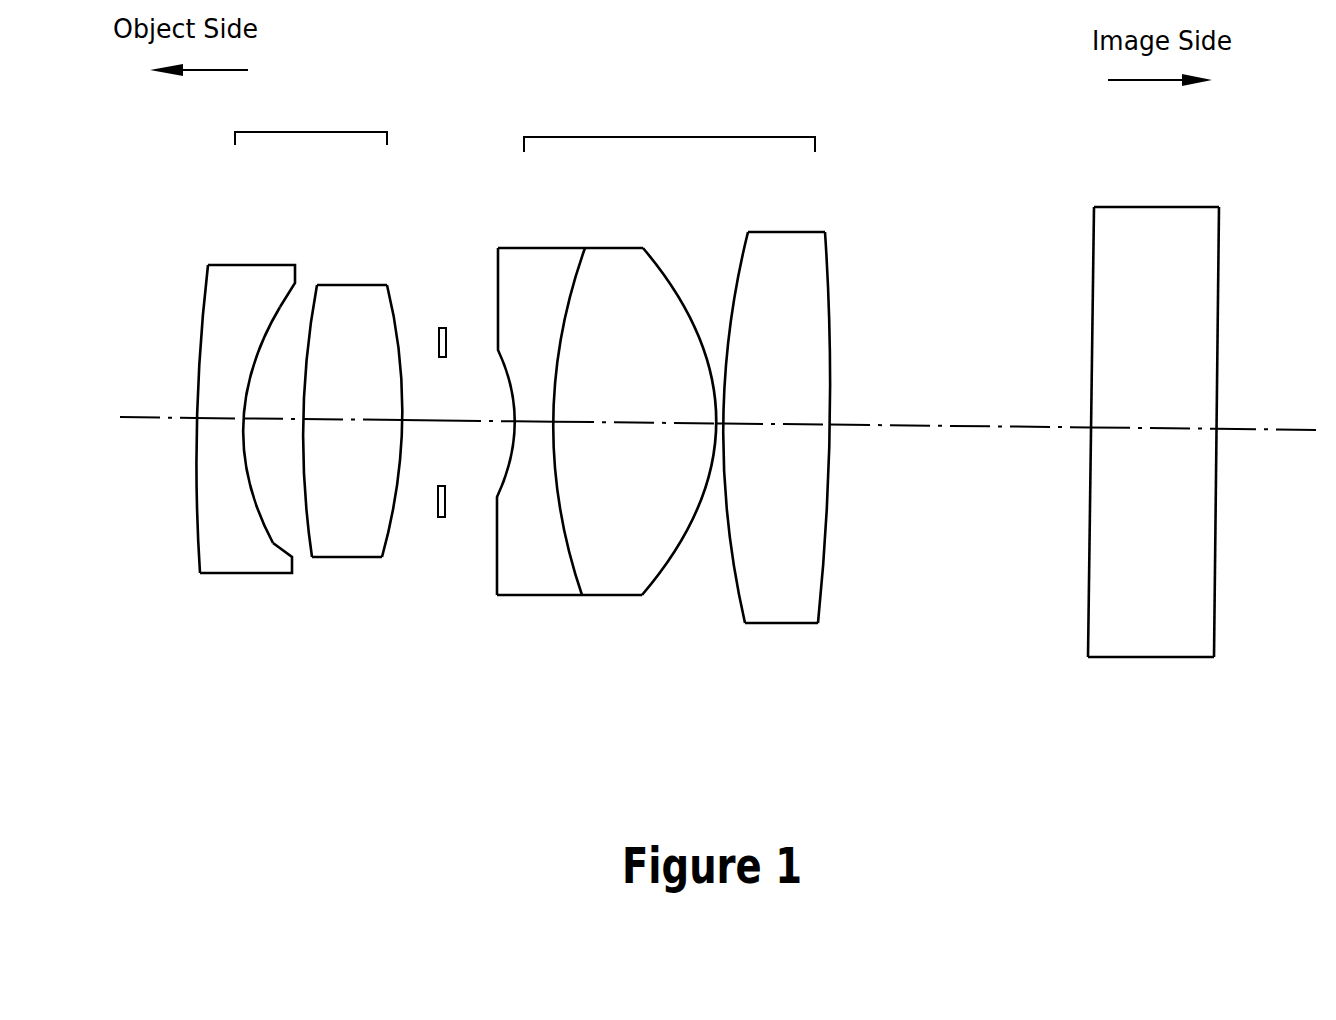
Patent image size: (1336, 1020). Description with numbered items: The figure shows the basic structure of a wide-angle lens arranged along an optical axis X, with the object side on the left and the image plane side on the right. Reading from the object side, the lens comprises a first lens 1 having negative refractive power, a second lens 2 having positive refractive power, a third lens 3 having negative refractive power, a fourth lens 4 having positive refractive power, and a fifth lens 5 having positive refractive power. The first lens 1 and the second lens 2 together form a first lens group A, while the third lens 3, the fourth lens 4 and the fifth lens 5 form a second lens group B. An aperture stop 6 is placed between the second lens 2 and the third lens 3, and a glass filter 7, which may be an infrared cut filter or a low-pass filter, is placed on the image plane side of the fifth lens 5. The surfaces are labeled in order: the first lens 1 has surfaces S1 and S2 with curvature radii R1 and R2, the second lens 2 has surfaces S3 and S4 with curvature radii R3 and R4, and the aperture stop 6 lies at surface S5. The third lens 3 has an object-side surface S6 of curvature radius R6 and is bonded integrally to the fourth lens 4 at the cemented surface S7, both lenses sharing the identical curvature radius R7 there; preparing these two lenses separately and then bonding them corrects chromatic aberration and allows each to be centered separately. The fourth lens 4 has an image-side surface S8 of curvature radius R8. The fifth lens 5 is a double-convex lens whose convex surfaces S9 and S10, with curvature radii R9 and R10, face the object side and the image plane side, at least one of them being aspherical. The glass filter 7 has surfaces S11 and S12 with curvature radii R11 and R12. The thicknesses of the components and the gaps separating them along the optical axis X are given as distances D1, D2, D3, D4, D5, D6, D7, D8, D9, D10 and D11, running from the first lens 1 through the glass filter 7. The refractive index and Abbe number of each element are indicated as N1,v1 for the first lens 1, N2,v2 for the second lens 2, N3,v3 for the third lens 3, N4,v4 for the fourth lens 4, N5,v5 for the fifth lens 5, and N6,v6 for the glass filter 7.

The first lens group A is at (311, 120).
The second lens group B is at (669, 128).
The optical axis X is at (132, 418).
The first lens 1 is at (233, 263).
The second lens 2 is at (318, 285).
The third lens 3 is at (527, 248).
The fourth lens 4 is at (617, 248).
The fifth lens 5 is at (795, 232).
The aperture stop 6 is at (447, 327).
The glass filter 7 is at (1160, 207).
The curvature radius R1 is at (202, 296).
The curvature radius R2 is at (278, 312).
The curvature radius R3 is at (305, 363).
The curvature radius R4 is at (393, 293).
The curvature radius R6 is at (507, 380).
The curvature radius R7 is at (575, 307).
The curvature radius R8 is at (687, 310).
The curvature radius R9 is at (743, 257).
The curvature radius R10 is at (830, 288).
The curvature radius R11 is at (1093, 275).
The curvature radius R12 is at (1218, 310).
The surface S1 is at (197, 370).
The surface S2 is at (254, 356).
The surface S3 is at (305, 393).
The surface S4 is at (403, 393).
The surface S5 is at (439, 340).
The surface S6 is at (512, 414).
The surface S7 is at (558, 393).
The surface S8 is at (690, 317).
The surface S9 is at (730, 318).
The surface S10 is at (830, 377).
The surface S11 is at (1092, 393).
The surface S12 is at (1218, 383).
The distance along optical axis D1 is at (215, 422).
The distance along optical axis D2 is at (278, 422).
The distance along optical axis D3 is at (363, 422).
The distance along optical axis D4 is at (433, 423).
The distance along optical axis D5 is at (480, 425).
The distance along optical axis D6 is at (537, 425).
The distance along optical axis D7 is at (630, 425).
The distance along optical axis D8 is at (717, 425).
The distance along optical axis D9 is at (797, 430).
The distance along optical axis D10 is at (955, 430).
The distance along optical axis D11 is at (1153, 433).
The refractive index and Abbe number of the first lens N1,v1 is at (213, 580).
The refractive index and Abbe number of the second lens N2,v2 is at (347, 560).
The refractive index and Abbe number of the third lens N3,v3 is at (520, 598).
The refractive index and Abbe number of the fourth lens N4,v4 is at (613, 598).
The refractive index and Abbe number of the fifth lens N5,v5 is at (798, 625).
The refractive index and Abbe number of the glass filter N6,v6 is at (1143, 658).